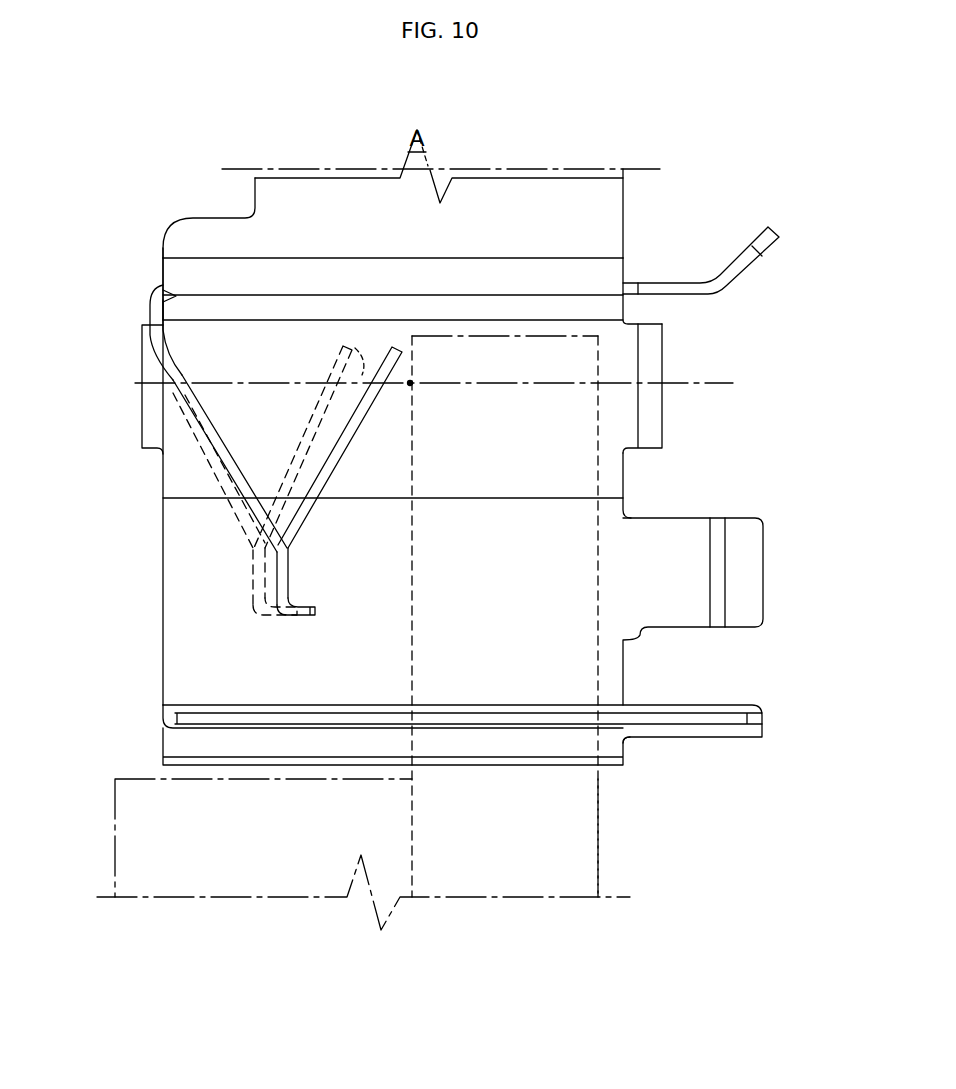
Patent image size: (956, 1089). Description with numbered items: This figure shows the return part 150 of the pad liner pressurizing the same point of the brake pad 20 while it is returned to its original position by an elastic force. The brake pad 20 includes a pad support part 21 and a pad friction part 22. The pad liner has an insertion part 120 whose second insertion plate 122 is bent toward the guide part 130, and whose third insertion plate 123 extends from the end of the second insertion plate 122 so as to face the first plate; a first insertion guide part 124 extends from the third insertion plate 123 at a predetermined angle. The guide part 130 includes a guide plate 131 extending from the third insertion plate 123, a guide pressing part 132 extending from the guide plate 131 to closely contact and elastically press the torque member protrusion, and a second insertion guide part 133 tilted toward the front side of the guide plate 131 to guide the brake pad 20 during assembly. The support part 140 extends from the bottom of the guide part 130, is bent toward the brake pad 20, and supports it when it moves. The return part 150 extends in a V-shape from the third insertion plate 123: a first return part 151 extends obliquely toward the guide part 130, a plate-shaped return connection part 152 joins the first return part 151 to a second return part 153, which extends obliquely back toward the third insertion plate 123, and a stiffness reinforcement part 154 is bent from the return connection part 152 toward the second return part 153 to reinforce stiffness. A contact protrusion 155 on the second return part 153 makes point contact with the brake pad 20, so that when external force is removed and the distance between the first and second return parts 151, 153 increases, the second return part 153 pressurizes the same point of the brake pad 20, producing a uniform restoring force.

The brake pad 20 is at (258, 1002).
The pad support part 21 is at (512, 857).
The pad friction part 22 is at (282, 872).
The insertion part 120 is at (743, 215).
The second insertion plate 122 is at (605, 217).
The third insertion plate 123 is at (600, 297).
The first insertion guide part 124 is at (757, 253).
The guide part 130 is at (790, 402).
The guide plate 131 is at (525, 600).
The guide pressing part 132 is at (650, 408).
The second insertion guide part 133 is at (660, 537).
The support part 140 is at (698, 745).
The return part 150 is at (78, 415).
The first return part 151 is at (166, 367).
The return connection part 152 is at (283, 578).
The second return part 153 is at (305, 517).
The stiffness reinforcement part 154 is at (307, 613).
The contact protrusion 155 is at (408, 392).